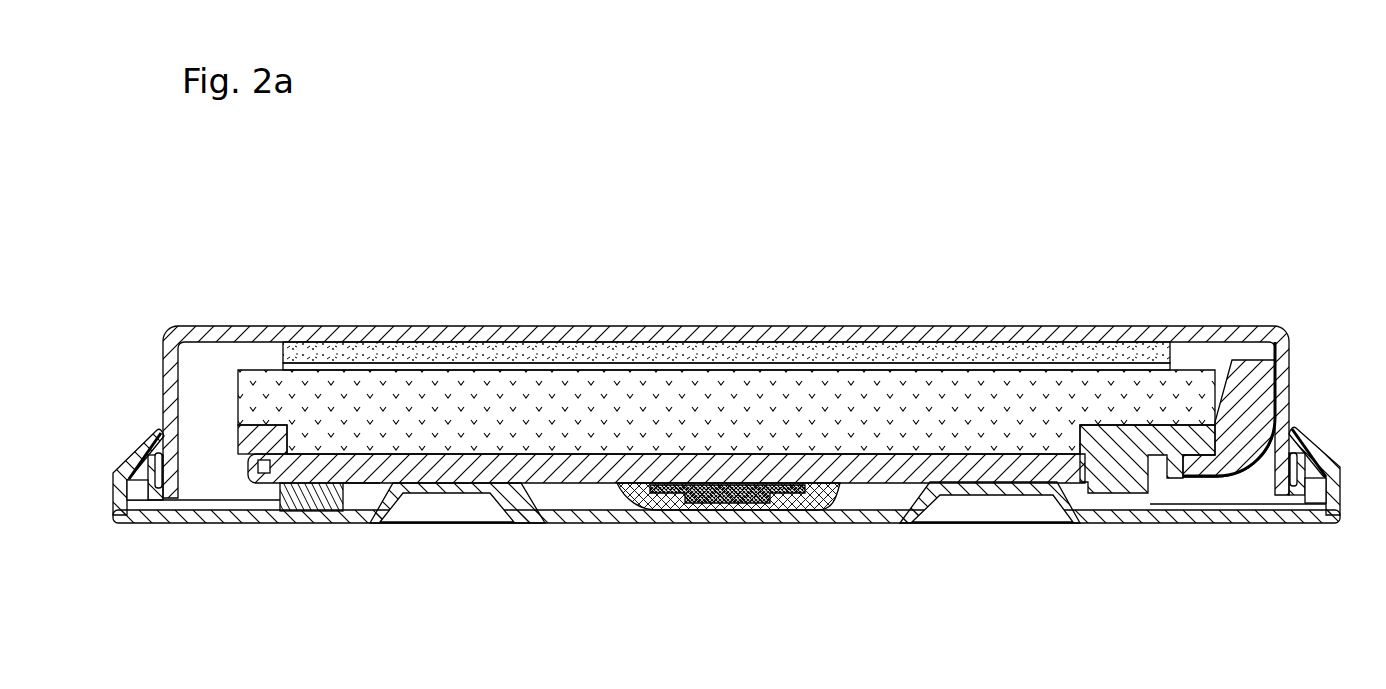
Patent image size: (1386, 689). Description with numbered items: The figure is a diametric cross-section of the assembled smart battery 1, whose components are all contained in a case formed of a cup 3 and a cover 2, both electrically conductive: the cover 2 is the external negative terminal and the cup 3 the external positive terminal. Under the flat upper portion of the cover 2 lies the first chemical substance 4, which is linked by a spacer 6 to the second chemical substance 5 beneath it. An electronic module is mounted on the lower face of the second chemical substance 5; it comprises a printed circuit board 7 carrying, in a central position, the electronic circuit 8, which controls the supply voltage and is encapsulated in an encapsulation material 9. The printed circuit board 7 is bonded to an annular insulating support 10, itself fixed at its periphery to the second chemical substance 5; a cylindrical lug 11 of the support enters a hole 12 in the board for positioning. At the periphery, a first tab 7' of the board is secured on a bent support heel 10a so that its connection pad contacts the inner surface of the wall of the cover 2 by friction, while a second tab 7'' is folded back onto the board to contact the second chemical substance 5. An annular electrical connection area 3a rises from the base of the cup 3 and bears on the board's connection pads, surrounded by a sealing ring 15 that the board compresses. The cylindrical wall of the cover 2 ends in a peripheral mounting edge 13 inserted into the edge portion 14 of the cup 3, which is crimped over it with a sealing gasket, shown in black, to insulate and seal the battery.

The smart battery 1 is at (1230, 291).
The cover 2 is at (392, 336).
The cup 3 is at (252, 524).
The electrical connection area 3a is at (487, 494).
The first chemical substance 4 is at (828, 352).
The second chemical substance 5 is at (863, 434).
The spacer 6 is at (957, 368).
The printed circuit board 7 is at (661, 496).
The first tab 7' is at (1314, 456).
The second tab 7'' is at (361, 525).
The electronic circuit 8 is at (740, 487).
The encapsulation material 9 is at (803, 494).
The insulating support 10 is at (1223, 453).
The support heel 10a is at (1252, 385).
The cylindrical lug 11 is at (1123, 470).
The hole 12 is at (1078, 484).
The peripheral mounting edge 13 is at (144, 448).
The edge portion 14 is at (130, 523).
The sealing ring 15 is at (312, 512).